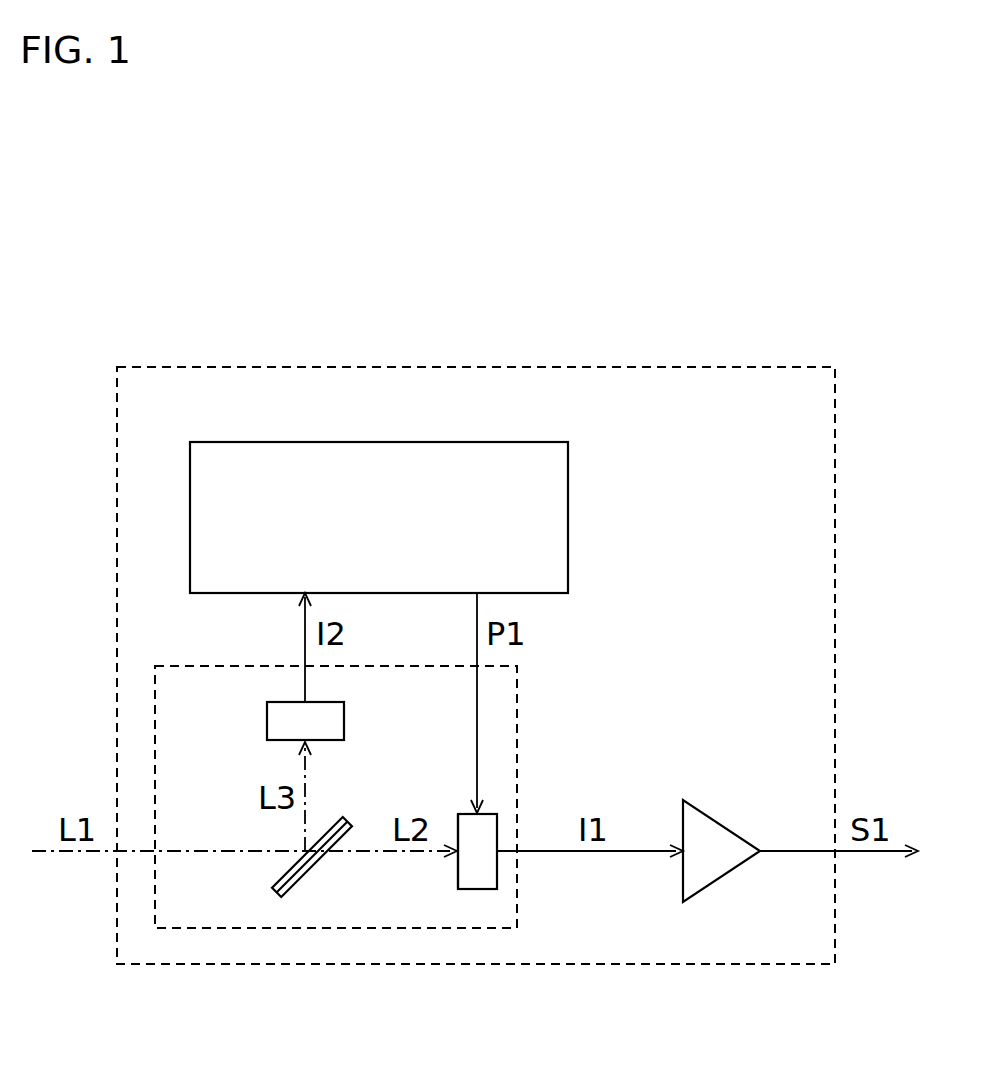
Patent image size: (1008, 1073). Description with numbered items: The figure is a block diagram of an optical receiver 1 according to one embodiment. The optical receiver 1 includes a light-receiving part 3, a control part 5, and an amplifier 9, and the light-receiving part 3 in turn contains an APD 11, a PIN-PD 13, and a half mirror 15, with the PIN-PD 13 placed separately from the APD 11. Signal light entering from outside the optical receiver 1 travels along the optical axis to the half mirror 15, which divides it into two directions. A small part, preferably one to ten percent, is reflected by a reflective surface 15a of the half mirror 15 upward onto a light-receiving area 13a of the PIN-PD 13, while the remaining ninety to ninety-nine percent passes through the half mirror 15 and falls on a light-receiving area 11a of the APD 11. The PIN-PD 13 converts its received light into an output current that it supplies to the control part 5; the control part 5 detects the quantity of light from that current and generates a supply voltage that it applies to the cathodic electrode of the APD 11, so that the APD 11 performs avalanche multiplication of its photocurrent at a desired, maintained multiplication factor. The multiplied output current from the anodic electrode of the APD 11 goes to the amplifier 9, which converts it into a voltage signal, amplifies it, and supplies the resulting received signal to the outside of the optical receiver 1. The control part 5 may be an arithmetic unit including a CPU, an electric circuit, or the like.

The optical receiver 1 is at (778, 365).
The light-receiving part 3 is at (353, 930).
The control part 5 is at (348, 442).
The amplifier 9 is at (727, 826).
The APD 11 is at (497, 877).
The light-receiving area of the APD 11a is at (458, 858).
The PIN-PD 13 is at (267, 718).
The light-receiving area of the PIN-PD 13a is at (315, 742).
The half mirror 15 is at (295, 887).
The reflective surface of the half mirror 15a is at (285, 869).